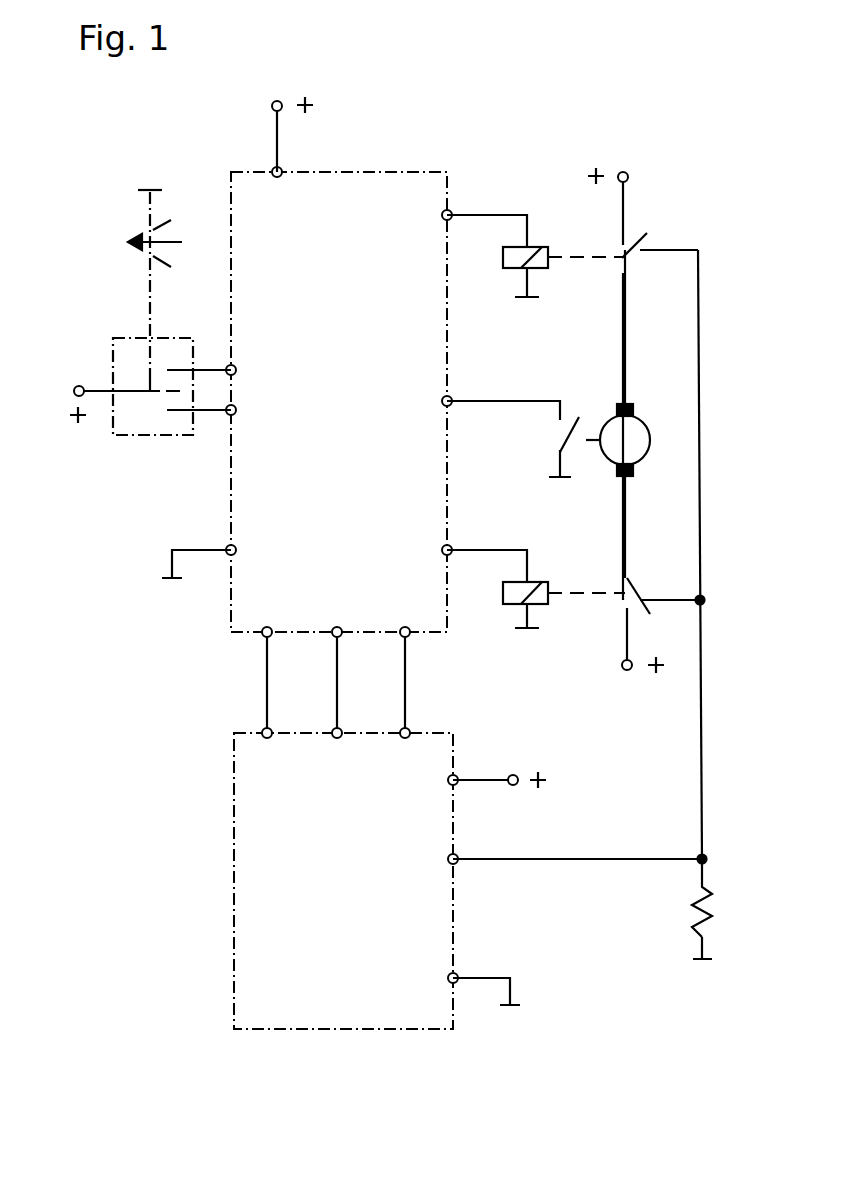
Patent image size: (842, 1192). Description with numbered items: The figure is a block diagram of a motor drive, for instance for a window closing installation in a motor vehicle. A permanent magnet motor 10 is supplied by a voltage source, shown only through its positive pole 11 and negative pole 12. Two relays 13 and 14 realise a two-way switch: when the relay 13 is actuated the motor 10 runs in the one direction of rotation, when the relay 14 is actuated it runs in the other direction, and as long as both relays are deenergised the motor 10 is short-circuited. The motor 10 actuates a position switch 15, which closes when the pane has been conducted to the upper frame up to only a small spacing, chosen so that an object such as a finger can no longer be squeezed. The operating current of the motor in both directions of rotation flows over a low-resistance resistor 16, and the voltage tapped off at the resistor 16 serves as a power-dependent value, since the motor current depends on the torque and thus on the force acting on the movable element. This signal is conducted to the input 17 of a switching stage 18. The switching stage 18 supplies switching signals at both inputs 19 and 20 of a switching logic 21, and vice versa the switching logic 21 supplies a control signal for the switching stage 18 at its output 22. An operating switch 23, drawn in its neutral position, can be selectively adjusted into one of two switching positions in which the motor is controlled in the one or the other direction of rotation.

The permanent magnet motor 10 is at (640, 426).
The positive pole 11 is at (272, 104).
The negative pole 12 is at (228, 554).
The relay 13 is at (542, 244).
The relay 14 is at (541, 582).
The position switch 15 is at (563, 440).
The low-resistance resistor 16 is at (698, 900).
The input of the switching stage 17 is at (457, 858).
The switching stage 18 is at (353, 1010).
The input of the switching logic 19 is at (272, 731).
The input of the switching logic 20 is at (342, 731).
The switching logic 21 is at (379, 185).
The output of the switching logic 22 is at (404, 627).
The operating switch 23 is at (158, 443).